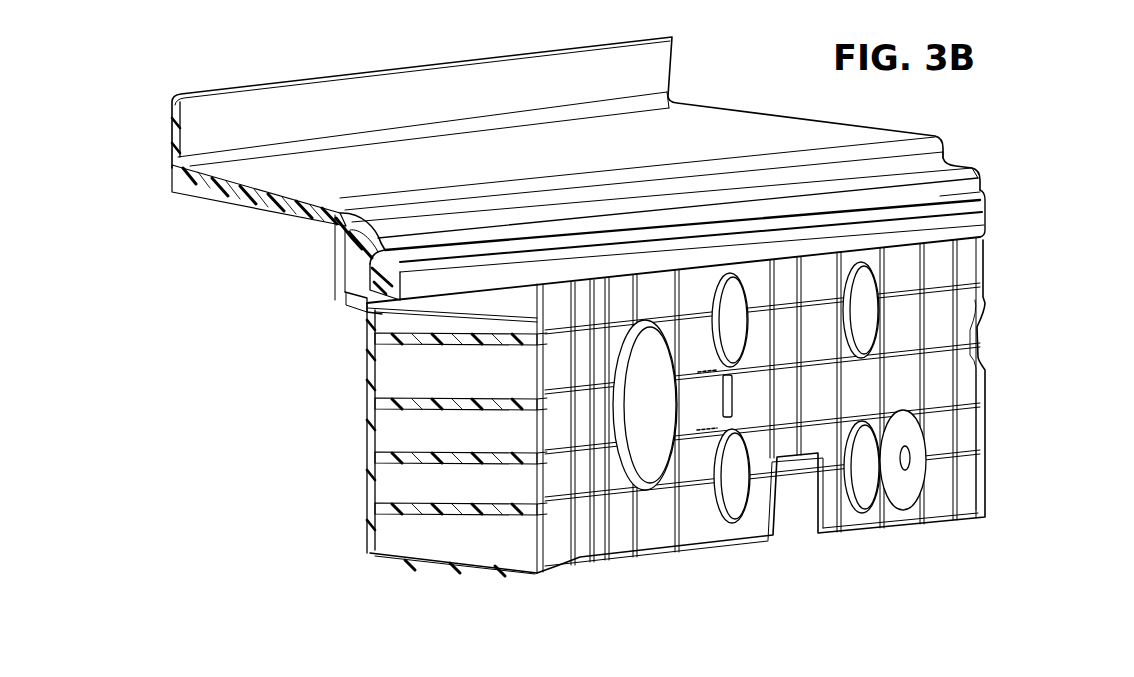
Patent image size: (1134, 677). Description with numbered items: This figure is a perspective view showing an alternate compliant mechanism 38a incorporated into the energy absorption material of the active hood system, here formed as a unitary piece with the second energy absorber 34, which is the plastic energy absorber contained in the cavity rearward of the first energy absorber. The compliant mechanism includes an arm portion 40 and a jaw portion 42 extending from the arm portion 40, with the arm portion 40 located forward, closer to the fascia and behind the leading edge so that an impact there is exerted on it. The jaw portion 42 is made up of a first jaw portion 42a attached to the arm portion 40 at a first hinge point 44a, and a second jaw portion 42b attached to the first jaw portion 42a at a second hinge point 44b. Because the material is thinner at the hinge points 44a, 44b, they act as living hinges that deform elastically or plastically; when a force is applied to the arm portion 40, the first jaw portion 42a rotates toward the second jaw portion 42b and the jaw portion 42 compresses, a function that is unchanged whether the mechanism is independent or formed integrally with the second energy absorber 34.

The second energy absorber 34 is at (612, 406).
The alternate compliant mechanism 38a is at (316, 395).
The arm portion 40 is at (217, 190).
The jaw portion 42 is at (661, 256).
The first jaw portion 42a is at (342, 258).
The second jaw portion 42b is at (973, 217).
The first hinge point 44a is at (338, 214).
The second hinge point 44b is at (337, 296).